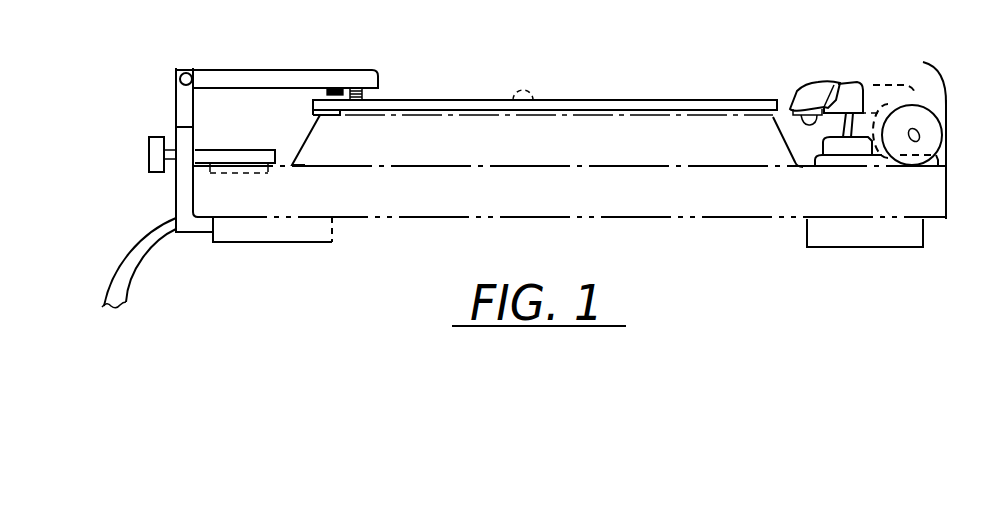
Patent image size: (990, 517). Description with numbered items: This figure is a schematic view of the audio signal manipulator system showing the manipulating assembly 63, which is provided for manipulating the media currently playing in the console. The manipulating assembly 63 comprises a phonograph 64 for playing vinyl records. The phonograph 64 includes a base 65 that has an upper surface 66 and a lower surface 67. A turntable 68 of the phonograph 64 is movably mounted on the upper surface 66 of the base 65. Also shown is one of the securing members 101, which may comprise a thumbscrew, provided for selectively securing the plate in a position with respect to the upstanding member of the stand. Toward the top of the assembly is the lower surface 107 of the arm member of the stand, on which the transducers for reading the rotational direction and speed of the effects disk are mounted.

The manipulating assembly 63 is at (387, 77).
The phonograph 64 is at (747, 208).
The base 65 is at (422, 203).
The upper surface 66 is at (868, 101).
The lower surface 67 is at (932, 220).
The turntable 68 is at (698, 142).
The securing members 101 is at (148, 147).
The lower surface of the arm member 107 is at (253, 87).